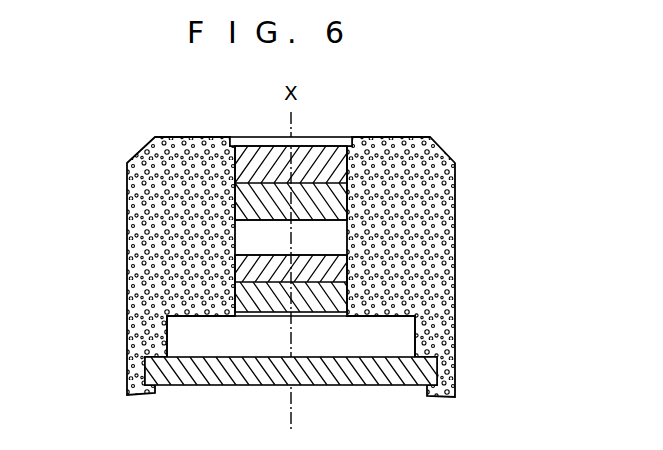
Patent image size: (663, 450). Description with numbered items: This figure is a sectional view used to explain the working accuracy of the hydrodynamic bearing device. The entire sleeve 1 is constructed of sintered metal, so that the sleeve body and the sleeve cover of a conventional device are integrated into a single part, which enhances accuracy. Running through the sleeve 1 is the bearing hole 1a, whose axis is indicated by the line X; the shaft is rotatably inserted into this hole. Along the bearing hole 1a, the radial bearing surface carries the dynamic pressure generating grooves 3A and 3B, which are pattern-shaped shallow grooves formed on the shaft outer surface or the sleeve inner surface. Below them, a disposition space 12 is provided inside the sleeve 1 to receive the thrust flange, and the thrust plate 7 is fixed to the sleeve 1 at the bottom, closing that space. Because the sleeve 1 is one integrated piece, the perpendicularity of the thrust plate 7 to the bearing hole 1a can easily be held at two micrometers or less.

The sleeve 1 is at (453, 145).
The bearing hole 1a is at (338, 237).
The dynamic pressure generating groove 3A is at (320, 158).
The dynamic pressure generating groove 3B is at (320, 300).
The thrust plate 7 is at (198, 370).
The disposition space 12 is at (388, 338).